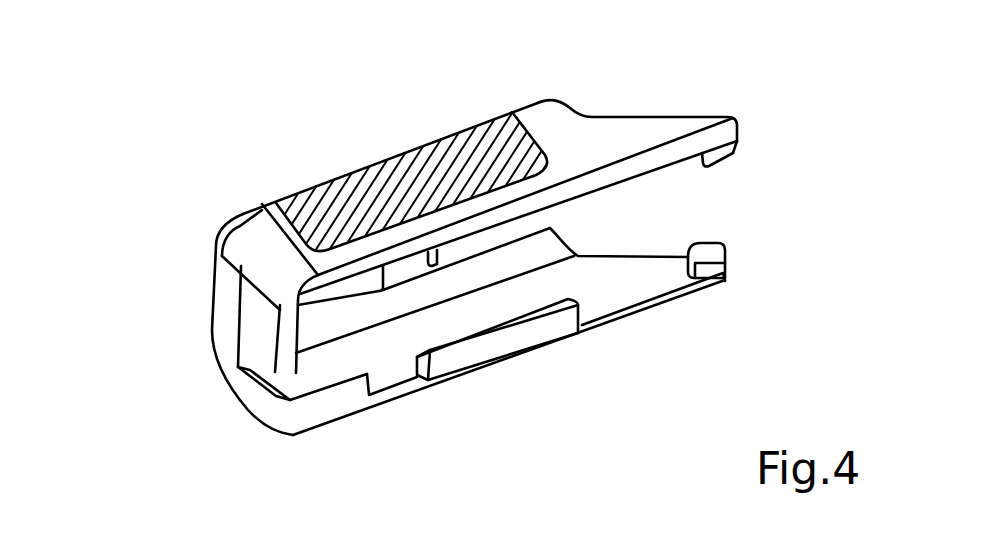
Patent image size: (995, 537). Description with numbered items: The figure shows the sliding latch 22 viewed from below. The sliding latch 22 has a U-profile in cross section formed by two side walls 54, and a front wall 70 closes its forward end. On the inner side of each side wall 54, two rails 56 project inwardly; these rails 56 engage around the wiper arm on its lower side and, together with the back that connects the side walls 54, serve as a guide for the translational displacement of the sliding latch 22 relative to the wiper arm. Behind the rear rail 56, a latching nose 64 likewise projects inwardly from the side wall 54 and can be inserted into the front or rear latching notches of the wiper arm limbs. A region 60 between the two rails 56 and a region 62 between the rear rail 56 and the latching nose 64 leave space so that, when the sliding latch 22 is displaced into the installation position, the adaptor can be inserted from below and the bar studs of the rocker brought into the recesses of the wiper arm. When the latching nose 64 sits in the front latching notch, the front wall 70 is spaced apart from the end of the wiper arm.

The sliding latch 22 is at (216, 191).
The side wall 54 is at (580, 142).
The rail 56 is at (316, 414).
The region between the two rails 60 is at (393, 384).
The region between the rear rail and the latching nose 62 is at (627, 295).
The latching nose 64 is at (723, 153).
The front wall 70 is at (220, 322).